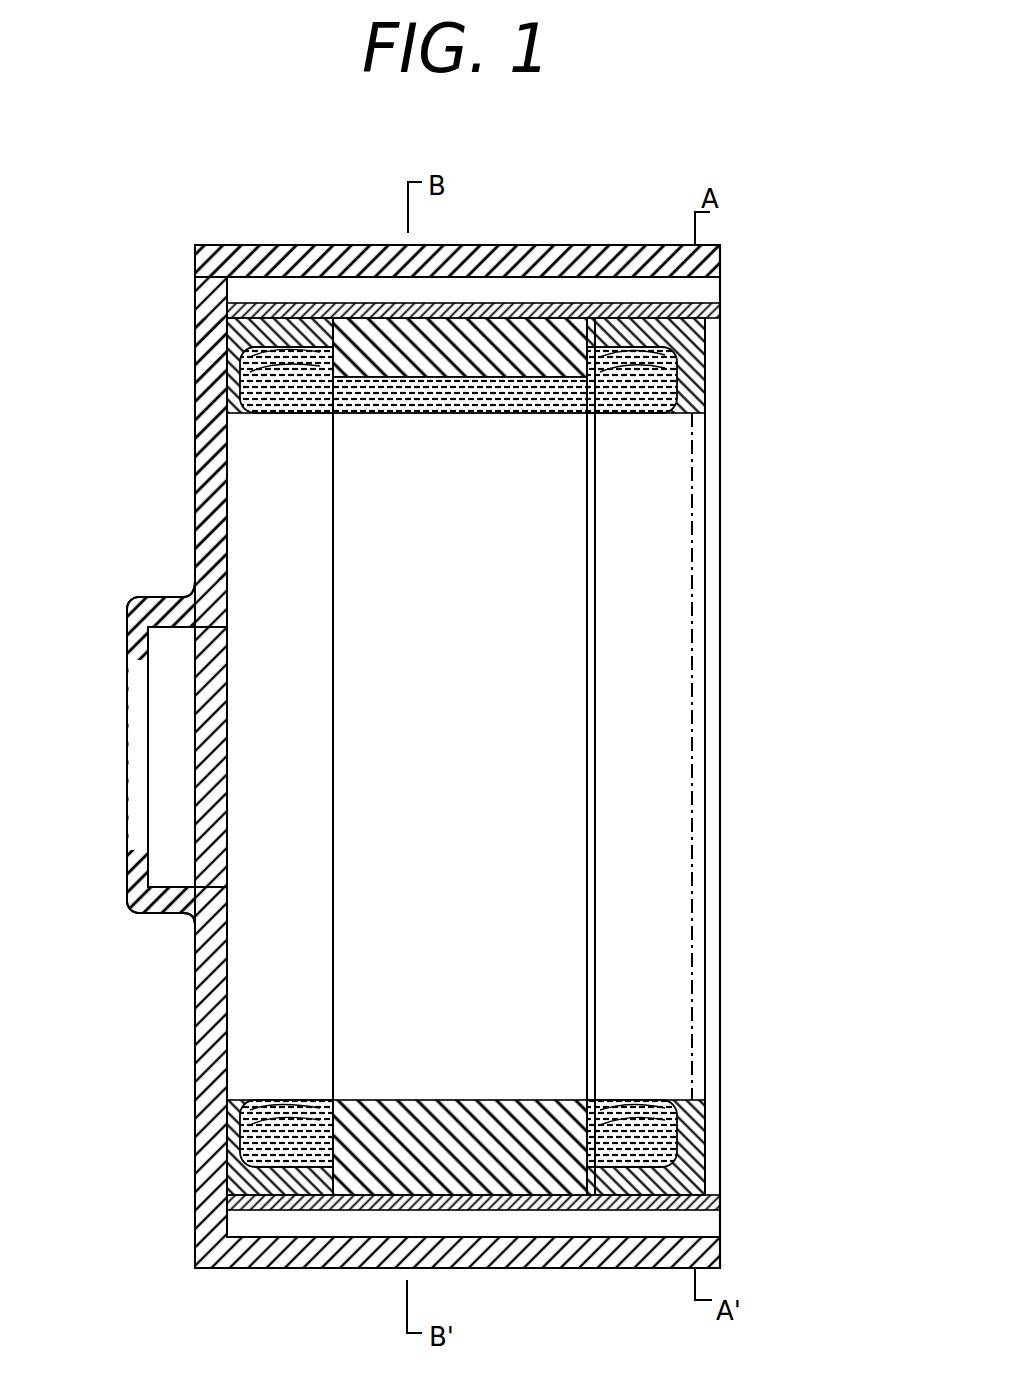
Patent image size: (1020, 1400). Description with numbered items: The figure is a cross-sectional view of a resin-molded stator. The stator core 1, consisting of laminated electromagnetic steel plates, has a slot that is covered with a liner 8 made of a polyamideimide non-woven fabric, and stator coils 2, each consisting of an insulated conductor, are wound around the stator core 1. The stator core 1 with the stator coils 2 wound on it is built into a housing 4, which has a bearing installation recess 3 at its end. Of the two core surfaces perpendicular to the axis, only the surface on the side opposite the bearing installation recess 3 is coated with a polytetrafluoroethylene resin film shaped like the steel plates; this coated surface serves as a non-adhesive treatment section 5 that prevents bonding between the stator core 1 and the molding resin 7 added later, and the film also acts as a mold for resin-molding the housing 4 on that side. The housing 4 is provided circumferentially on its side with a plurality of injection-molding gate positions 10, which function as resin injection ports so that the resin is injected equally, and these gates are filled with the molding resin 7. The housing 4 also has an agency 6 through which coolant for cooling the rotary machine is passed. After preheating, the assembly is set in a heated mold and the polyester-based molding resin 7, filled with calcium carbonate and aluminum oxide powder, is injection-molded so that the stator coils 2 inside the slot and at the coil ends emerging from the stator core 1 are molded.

The stator core 1 is at (702, 383).
The stator coil 2 is at (195, 357).
The bearing installation recess 3 is at (172, 640).
The housing 4 is at (193, 283).
The non-adhesive treatment section 5 is at (590, 486).
The agency 6 is at (697, 292).
The molding resin 7 is at (195, 430).
The liner 8 is at (535, 245).
The injection-molding gate position 10 is at (203, 1170).